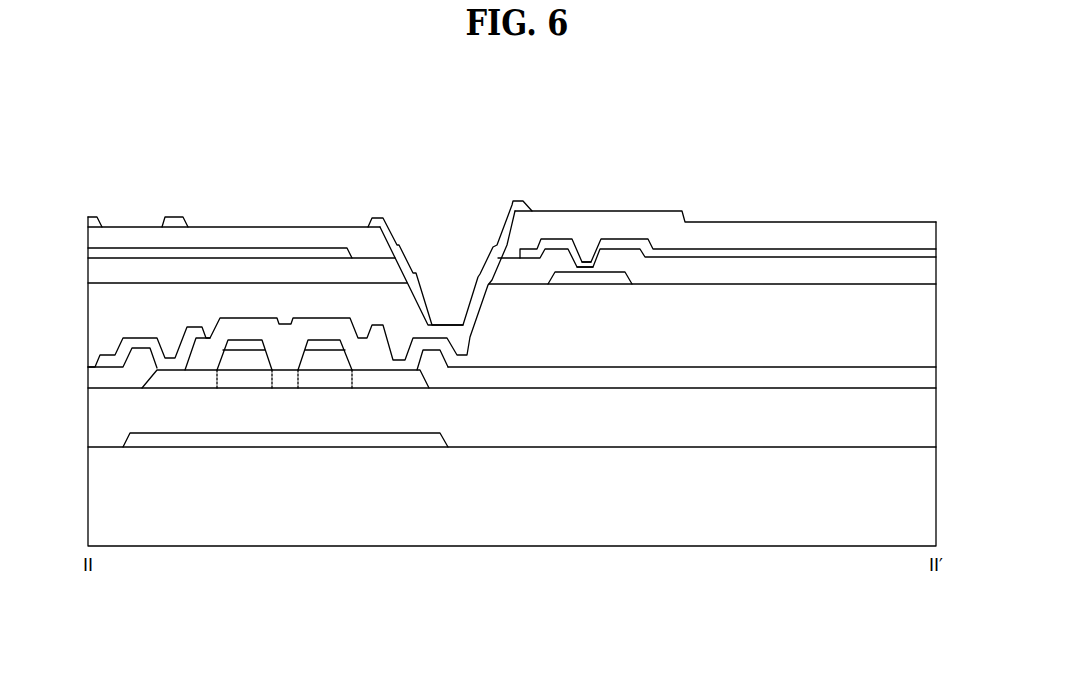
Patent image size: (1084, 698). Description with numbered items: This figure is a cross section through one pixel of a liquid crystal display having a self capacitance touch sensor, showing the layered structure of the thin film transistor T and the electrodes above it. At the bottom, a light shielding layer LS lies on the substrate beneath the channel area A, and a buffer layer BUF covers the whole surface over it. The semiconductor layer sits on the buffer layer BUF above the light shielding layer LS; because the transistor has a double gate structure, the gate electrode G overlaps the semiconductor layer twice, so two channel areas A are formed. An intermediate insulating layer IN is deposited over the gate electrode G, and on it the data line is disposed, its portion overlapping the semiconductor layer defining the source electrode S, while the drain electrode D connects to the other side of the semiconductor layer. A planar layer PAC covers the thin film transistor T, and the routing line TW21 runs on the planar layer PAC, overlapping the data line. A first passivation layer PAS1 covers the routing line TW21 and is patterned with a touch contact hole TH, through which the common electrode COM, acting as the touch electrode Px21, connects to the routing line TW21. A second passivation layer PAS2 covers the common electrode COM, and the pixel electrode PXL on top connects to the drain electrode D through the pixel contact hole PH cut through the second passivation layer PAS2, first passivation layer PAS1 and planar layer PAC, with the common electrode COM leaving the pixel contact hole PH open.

The pixel electrode PXL is at (95, 220).
The common electrode COM is at (315, 252).
The pixel contact hole PH is at (444, 232).
The 2row 1column routing line TW21 is at (572, 277).
The touch contact hole TH is at (584, 232).
The common electrode (touch electrode) of the 2row 1column pixel Px21 is at (647, 240).
The second passivation layer PAS2 is at (780, 228).
The first passivation layer PAS1 is at (852, 262).
The source electrode S is at (178, 363).
The gate electrode G is at (235, 348).
The drain electrode D is at (407, 382).
The channel area A is at (255, 380).
The thin film transistor T is at (350, 630).
The light shielding layer LS is at (415, 442).
The buffer layer BUF is at (628, 435).
The intermediate insulating layer IN is at (690, 390).
The planar layer PAC is at (758, 352).